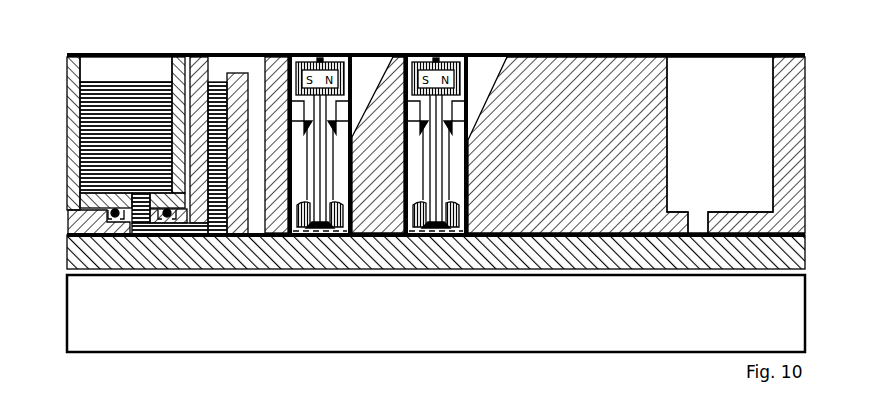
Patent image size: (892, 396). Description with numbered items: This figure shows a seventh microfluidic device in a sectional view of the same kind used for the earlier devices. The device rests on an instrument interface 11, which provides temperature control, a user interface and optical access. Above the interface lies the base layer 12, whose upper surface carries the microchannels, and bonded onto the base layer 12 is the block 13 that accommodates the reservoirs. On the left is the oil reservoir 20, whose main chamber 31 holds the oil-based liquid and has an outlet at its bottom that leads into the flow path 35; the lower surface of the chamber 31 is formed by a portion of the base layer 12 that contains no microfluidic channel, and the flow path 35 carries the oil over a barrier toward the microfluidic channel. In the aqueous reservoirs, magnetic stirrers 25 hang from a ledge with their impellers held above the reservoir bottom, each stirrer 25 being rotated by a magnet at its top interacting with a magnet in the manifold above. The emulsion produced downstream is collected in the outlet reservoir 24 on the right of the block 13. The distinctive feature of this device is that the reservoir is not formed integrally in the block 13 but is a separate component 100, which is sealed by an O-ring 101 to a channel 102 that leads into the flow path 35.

The instrument interface 11 is at (777, 312).
The base layer 12 is at (793, 250).
The block 13 is at (608, 82).
The oil reservoir 20 is at (142, 68).
The outlet reservoir 24 is at (720, 145).
The magnetic stirrer 25 is at (330, 102).
The main chamber 31 is at (102, 112).
The flow path 35 is at (240, 65).
The separate component 100 is at (67, 130).
The O-ring 101 is at (67, 222).
The channel 102 is at (100, 243).